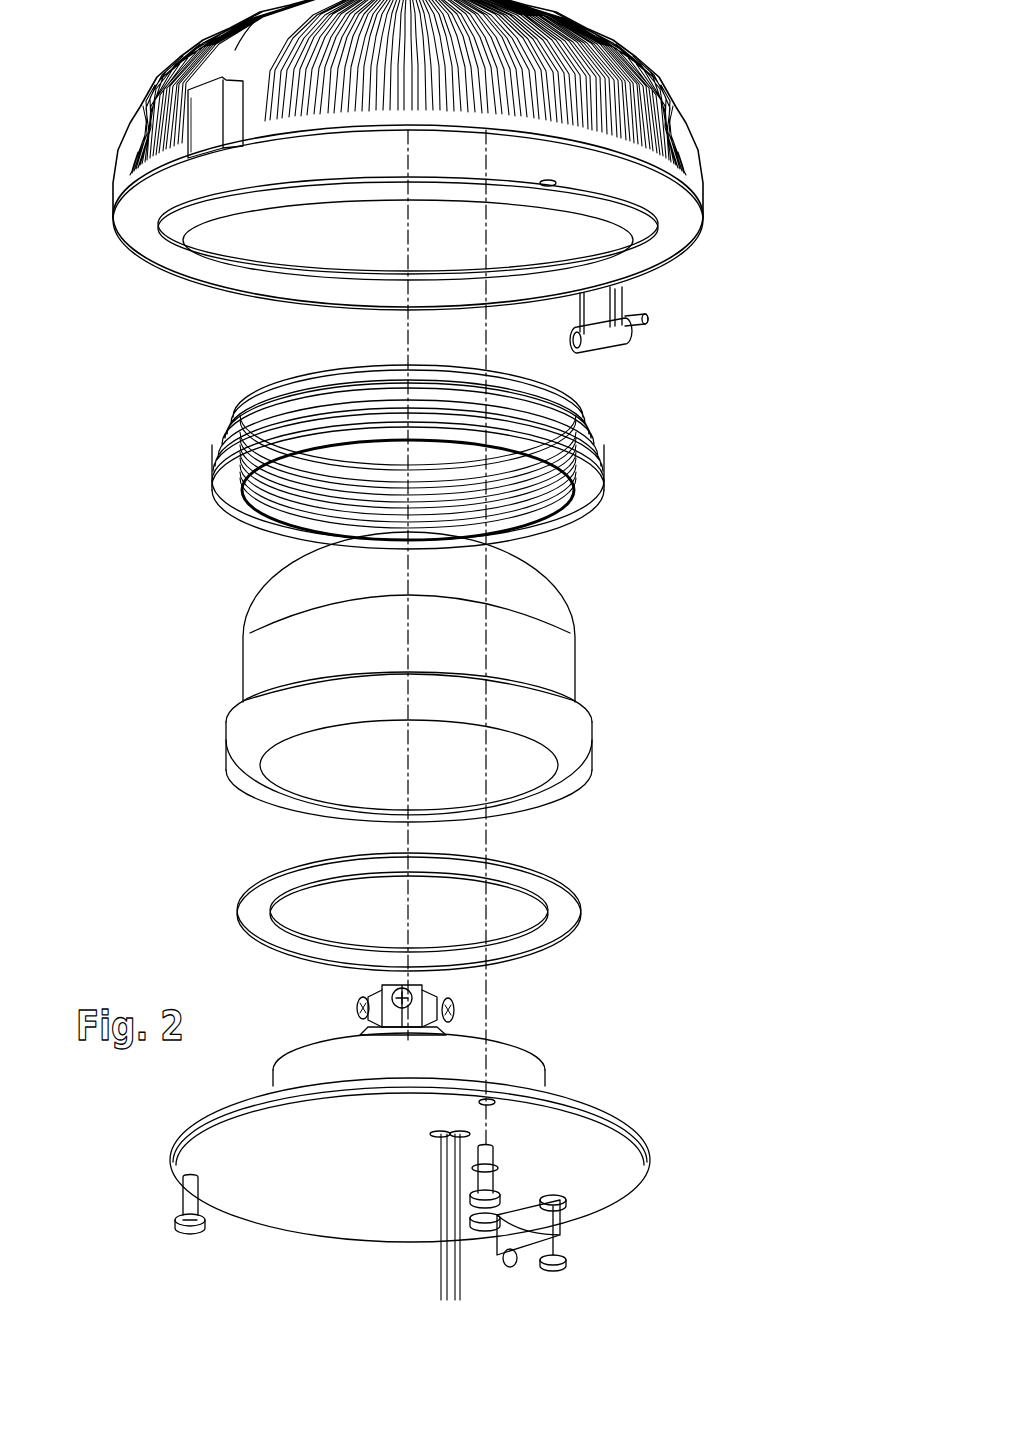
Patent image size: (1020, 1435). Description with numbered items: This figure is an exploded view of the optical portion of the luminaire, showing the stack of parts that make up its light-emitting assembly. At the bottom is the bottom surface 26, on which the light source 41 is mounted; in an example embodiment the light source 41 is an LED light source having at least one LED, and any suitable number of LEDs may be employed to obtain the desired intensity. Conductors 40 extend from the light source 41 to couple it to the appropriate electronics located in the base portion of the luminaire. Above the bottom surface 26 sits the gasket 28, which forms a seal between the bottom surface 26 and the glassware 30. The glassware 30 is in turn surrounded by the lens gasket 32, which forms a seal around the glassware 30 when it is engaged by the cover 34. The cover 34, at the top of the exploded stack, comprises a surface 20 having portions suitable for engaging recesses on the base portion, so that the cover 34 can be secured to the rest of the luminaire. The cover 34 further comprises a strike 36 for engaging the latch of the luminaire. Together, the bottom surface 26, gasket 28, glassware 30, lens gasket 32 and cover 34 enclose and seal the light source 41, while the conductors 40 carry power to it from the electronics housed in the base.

The surface 20 is at (600, 343).
The bottom surface 26 is at (637, 1197).
The gasket 28 is at (580, 893).
The glassware 30 is at (575, 710).
The lens gasket 32 is at (600, 468).
The cover 34 is at (592, 24).
The strike 36 is at (203, 132).
The conductors 40 is at (467, 1273).
The light source 41 is at (460, 1012).